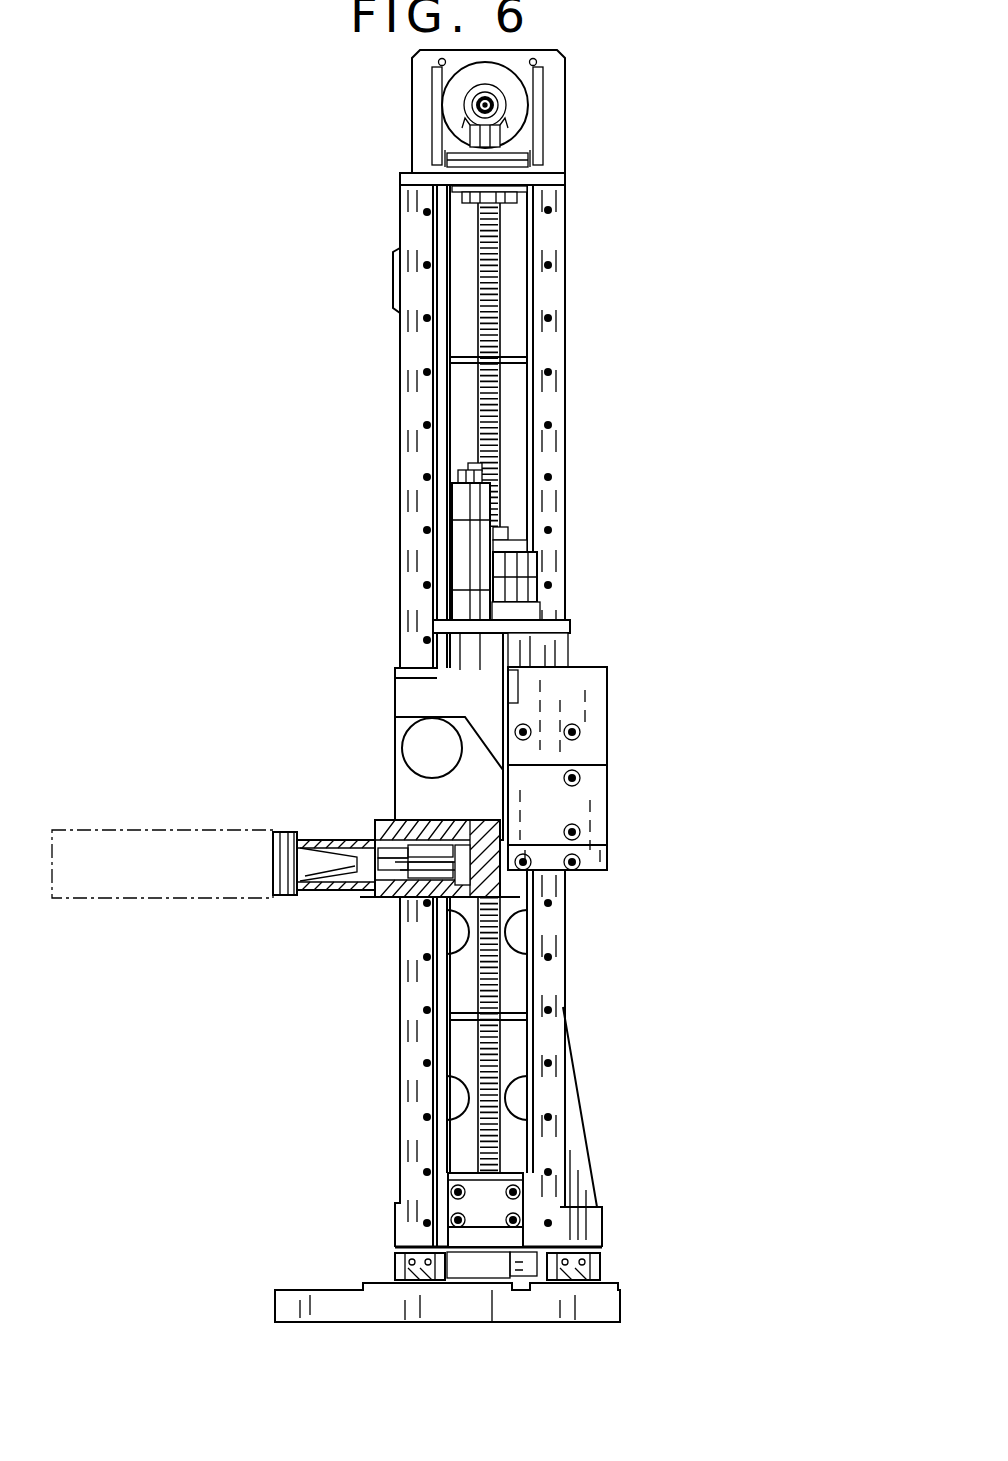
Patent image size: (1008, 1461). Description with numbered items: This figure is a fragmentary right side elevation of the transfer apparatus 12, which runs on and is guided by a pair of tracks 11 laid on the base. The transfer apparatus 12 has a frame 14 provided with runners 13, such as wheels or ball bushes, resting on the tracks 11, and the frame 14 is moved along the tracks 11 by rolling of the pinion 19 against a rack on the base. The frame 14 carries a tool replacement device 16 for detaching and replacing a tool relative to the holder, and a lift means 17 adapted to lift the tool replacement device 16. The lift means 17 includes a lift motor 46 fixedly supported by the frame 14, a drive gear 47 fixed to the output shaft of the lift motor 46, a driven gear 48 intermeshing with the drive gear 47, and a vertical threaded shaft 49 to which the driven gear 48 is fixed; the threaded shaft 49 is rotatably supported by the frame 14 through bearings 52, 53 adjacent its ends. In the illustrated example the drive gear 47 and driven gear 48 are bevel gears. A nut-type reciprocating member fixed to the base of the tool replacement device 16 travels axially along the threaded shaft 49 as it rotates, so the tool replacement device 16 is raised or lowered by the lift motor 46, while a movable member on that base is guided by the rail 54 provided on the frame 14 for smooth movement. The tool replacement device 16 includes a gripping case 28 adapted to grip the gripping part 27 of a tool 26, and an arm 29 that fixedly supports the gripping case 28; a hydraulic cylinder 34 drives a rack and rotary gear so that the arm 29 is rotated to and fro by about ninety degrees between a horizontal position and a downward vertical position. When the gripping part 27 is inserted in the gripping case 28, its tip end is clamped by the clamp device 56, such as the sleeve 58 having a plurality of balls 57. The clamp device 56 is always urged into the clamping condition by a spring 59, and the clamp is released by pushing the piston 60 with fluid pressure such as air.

The tracks 11 is at (410, 1293).
The transfer apparatus 12 is at (596, 421).
The runners 13 is at (398, 1262).
The frame 14 is at (572, 1095).
The tool replacement device 16 is at (640, 721).
The lift means 17 is at (532, 219).
The pinion 19 is at (478, 1265).
The tool 26 is at (193, 832).
The gripping part 27 is at (315, 860).
The gripping case 28 is at (370, 840).
The arm 29 is at (470, 740).
The hydraulic cylinder 34 is at (480, 568).
The lift motor 46 is at (556, 110).
The drive gear 47 is at (492, 102).
The driven gear 48 is at (500, 140).
The threaded shaft 49 is at (500, 393).
The bearing 52 is at (520, 193).
The bearing 53 is at (512, 1203).
The rail 54 is at (440, 406).
The clamp device 56 is at (368, 898).
The balls 57 is at (377, 890).
The sleeve 58 is at (392, 900).
The spring 59 is at (402, 955).
The piston 60 is at (456, 848).